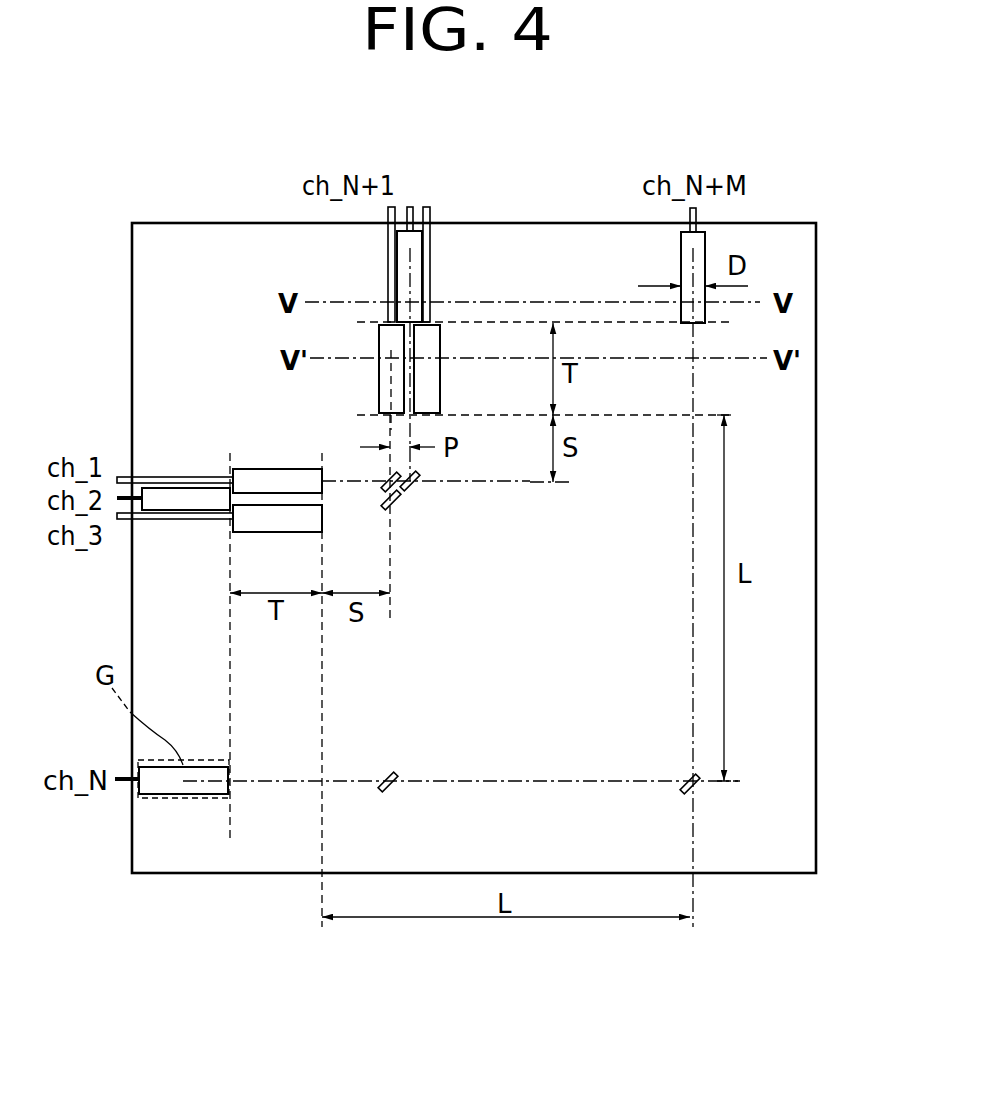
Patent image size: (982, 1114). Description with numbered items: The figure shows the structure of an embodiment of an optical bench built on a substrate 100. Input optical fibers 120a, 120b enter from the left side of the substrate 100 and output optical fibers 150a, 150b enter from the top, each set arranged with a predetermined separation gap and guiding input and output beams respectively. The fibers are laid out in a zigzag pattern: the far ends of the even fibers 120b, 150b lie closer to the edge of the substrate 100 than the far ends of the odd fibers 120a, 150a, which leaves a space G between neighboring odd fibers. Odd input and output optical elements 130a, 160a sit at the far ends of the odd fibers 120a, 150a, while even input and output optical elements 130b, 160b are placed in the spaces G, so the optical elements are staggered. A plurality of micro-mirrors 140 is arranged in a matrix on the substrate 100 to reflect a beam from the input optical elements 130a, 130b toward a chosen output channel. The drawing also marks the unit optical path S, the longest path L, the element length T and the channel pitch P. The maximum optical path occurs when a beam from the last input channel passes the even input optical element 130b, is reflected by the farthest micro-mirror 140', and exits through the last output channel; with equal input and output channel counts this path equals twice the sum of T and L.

The substrate 100 is at (213, 228).
The odd input optical fiber 120a is at (163, 480).
The even input optical fiber 120b is at (117, 519).
The odd input optical element 130a is at (258, 525).
The even input optical element 130b is at (190, 502).
The micro-mirror 140 is at (421, 631).
The farthest micro-mirror 140' is at (658, 754).
The odd output optical fiber 150a is at (428, 272).
The even output optical fiber 150b is at (413, 213).
The odd output optical element 160a is at (380, 383).
The even output optical element 160b is at (402, 267).